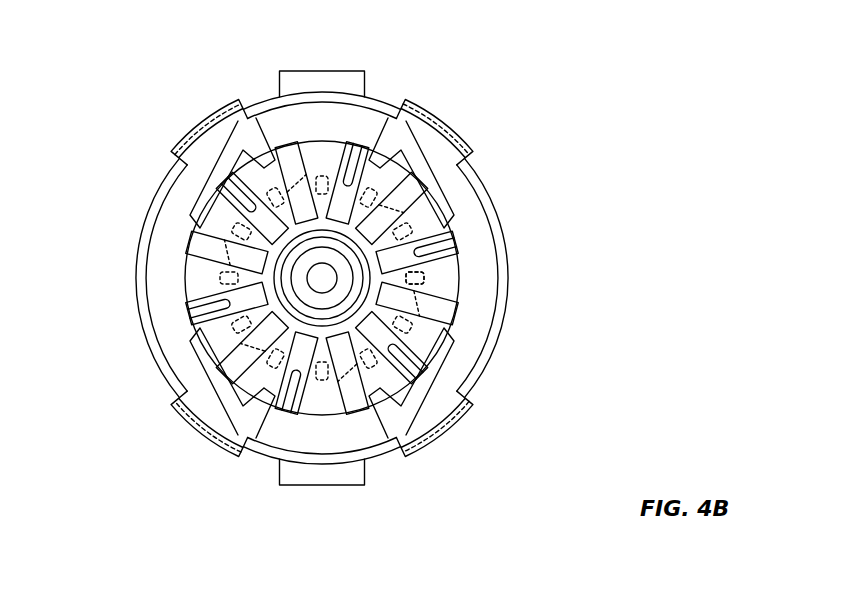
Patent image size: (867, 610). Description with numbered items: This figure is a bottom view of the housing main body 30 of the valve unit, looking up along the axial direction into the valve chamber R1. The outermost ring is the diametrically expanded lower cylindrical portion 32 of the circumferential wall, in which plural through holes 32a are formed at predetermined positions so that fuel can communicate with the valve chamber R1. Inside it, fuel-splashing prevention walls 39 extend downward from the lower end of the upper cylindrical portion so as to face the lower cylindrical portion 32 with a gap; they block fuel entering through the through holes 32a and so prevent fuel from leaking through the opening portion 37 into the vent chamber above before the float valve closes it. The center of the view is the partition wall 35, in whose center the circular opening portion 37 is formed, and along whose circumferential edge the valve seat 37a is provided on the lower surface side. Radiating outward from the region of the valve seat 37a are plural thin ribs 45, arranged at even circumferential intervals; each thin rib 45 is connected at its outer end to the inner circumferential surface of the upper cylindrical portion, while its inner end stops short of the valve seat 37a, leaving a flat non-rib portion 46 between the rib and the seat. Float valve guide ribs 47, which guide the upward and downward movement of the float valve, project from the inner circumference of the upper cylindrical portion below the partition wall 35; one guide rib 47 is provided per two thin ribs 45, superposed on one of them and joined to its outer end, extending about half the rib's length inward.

The housing main body 30 is at (489, 159).
The lower cylindrical portion 32 is at (500, 215).
The through holes 32a is at (203, 428).
The partition wall 35 is at (382, 320).
The opening portion 37 is at (322, 280).
The valve seat 37a is at (322, 318).
The fuel-splashing prevention walls 39 is at (420, 165).
The thin ribs 45 is at (365, 185).
The flat non-rib portion 46 is at (330, 220).
The float valve guide ribs 47 is at (348, 173).
The valve chamber R1 is at (432, 268).